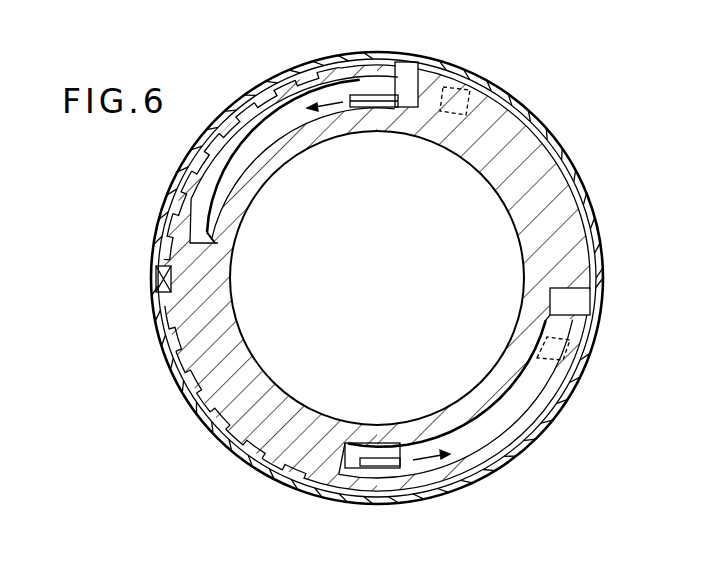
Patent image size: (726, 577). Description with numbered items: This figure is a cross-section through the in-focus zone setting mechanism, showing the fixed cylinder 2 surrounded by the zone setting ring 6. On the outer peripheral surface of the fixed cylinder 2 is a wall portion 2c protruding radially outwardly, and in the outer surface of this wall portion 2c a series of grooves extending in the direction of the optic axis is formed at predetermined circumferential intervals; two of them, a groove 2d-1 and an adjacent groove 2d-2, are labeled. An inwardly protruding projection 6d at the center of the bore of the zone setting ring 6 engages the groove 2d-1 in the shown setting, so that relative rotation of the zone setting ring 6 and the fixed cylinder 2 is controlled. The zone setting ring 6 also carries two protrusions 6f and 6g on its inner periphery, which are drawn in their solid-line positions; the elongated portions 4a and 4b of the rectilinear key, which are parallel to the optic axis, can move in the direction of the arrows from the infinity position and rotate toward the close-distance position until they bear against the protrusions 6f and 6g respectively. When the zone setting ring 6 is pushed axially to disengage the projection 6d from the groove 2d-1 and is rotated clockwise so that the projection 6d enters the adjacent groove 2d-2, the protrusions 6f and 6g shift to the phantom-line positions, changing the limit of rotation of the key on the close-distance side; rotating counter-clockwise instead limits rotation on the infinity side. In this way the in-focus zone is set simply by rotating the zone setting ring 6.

The fixed cylinder 2 is at (530, 147).
The wall portion 2c is at (327, 80).
The groove 2d-1 is at (162, 288).
The adjacent groove 2d-2 is at (165, 223).
The elongated portion of the rectilinear key 4a is at (333, 487).
The elongated portion of the rectilinear key 4b is at (368, 95).
The zone setting ring 6 is at (584, 179).
The projection 6d is at (160, 278).
The protrusion 6f is at (588, 297).
The protrusion 6g is at (412, 67).